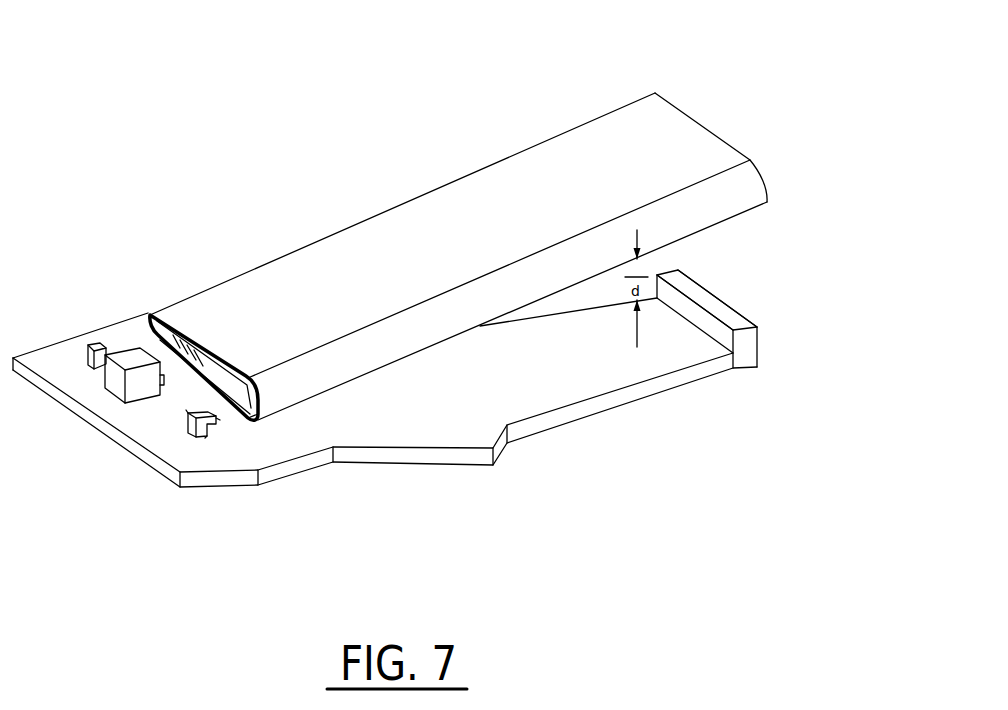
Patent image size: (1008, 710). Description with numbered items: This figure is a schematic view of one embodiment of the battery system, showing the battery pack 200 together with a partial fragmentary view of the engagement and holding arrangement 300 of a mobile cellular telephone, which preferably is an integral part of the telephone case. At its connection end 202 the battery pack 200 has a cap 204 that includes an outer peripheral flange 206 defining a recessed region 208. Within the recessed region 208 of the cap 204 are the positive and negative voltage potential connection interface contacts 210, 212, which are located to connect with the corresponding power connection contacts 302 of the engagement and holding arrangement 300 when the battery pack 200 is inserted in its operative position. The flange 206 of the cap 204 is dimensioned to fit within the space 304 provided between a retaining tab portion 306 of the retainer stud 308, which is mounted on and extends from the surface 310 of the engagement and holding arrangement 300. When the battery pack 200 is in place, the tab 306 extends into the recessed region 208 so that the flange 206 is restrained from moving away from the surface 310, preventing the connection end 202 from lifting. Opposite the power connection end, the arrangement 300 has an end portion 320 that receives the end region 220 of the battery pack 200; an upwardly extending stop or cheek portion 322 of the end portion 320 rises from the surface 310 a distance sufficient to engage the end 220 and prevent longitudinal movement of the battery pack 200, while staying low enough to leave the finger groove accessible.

The battery pack 200 is at (362, 217).
The connection end 202 is at (162, 304).
The cap 204 is at (258, 422).
The outer peripheral flange 206 is at (243, 405).
The recessed region 208 is at (188, 340).
The positive voltage potential connection interface contact 210 is at (138, 333).
The negative voltage potential connection interface contact 212 is at (195, 412).
The end region 220 is at (643, 97).
The engagement and holding arrangement 300 is at (566, 425).
The power connection contacts 302 is at (118, 342).
The space 304 is at (205, 438).
The retaining tab portion 306 is at (186, 410).
The retainer stud 308 is at (220, 420).
The surface 310 is at (556, 384).
The end portion 320 is at (708, 267).
The stop or cheek portion 322 is at (740, 315).